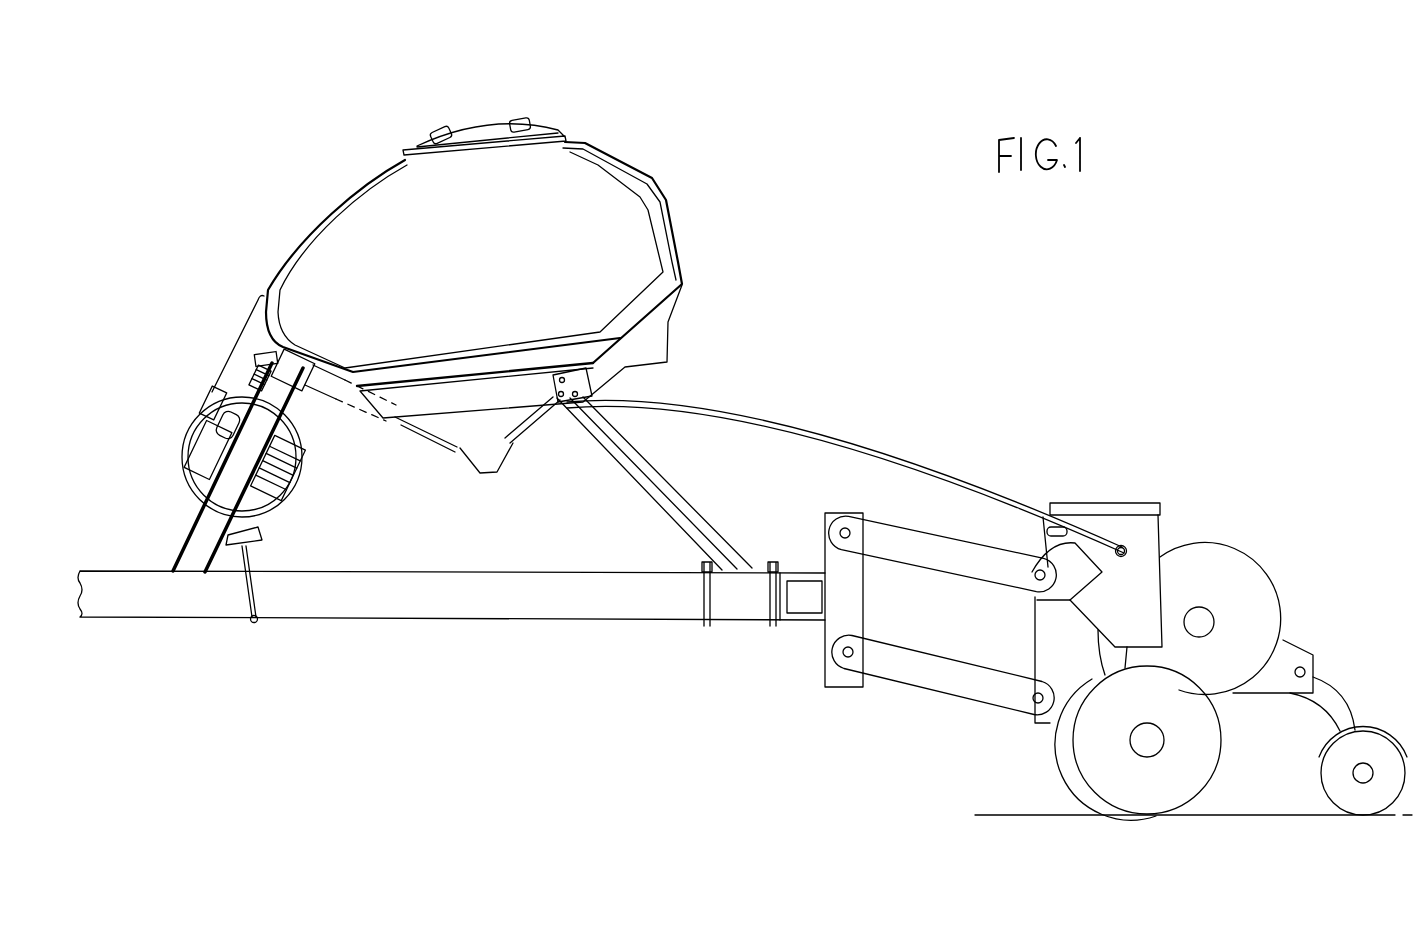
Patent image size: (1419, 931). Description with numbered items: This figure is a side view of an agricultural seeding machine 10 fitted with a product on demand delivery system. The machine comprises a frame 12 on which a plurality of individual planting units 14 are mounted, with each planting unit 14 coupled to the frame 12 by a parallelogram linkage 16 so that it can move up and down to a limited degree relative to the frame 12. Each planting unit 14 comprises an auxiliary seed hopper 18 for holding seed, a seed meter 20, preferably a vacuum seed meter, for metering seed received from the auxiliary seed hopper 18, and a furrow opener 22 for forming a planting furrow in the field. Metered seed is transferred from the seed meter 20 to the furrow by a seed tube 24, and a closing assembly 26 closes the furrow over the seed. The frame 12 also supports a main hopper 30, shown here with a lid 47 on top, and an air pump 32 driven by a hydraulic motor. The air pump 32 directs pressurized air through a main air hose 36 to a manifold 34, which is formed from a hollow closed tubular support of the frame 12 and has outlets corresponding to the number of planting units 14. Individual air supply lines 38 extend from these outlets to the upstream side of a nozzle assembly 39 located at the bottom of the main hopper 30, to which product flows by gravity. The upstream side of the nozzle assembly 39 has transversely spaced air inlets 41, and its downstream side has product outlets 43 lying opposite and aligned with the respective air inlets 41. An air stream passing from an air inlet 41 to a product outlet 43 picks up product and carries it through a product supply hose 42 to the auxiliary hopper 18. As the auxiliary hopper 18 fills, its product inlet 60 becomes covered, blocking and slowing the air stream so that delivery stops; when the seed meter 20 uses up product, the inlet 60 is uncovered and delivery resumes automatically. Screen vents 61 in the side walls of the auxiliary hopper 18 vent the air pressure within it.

The agricultural seeding machine 10 is at (842, 238).
The frame 12 is at (481, 617).
The planting unit 14 is at (1206, 467).
The parallelogram linkage 16 is at (924, 719).
The auxiliary seed hopper 18 is at (1132, 614).
The seed meter 20 is at (1243, 599).
The furrow opener 22 is at (1061, 807).
The seed tube 24 is at (1108, 653).
The closing assembly 26 is at (1365, 742).
The main hopper 30 is at (492, 267).
The air pump 32 is at (198, 477).
The manifold 34 is at (276, 362).
The main air hose 36 is at (268, 377).
The air supply line 38 is at (324, 388).
The nozzle assembly 39 is at (459, 501).
The air inlet 41 is at (460, 453).
The product supply hose 42 is at (727, 421).
The product outlet 43 is at (510, 447).
The tank lid 47 is at (482, 137).
The auxiliary hopper product inlet 60 is at (1126, 544).
The screen vent 61 is at (1046, 531).